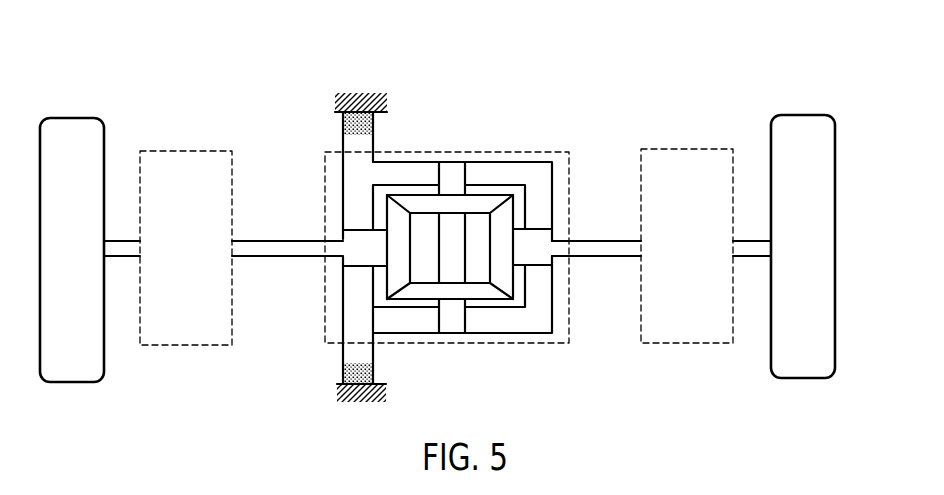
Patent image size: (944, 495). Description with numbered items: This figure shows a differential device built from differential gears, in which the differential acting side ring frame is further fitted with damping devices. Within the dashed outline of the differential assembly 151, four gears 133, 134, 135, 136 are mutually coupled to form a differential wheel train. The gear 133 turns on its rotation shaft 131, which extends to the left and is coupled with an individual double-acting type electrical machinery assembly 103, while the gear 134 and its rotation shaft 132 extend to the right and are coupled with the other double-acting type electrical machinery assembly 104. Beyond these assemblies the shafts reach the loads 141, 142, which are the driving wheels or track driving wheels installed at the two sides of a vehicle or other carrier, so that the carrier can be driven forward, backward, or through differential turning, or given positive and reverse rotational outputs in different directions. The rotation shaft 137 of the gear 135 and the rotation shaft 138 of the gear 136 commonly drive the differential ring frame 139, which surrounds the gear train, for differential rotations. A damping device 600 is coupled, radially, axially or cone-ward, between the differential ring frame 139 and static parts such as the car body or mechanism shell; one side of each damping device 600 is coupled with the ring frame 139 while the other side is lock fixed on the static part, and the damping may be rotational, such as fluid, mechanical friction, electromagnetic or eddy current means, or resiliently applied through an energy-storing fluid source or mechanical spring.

The load 141 is at (73, 143).
The load 142 is at (800, 140).
The double-acting type electrical machinery assembly 103 is at (181, 150).
The double-acting type electrical machinery assembly 104 is at (658, 148).
The rotation shaft 131 is at (312, 250).
The rotation shaft 132 is at (587, 247).
The differential gear set 151 is at (325, 170).
The differential ring frame 139 is at (537, 175).
The damping device 600 is at (373, 123).
The gear 133 is at (393, 216).
The gear 134 is at (500, 277).
The gear 135 is at (422, 207).
The gear 136 is at (413, 297).
The rotation shaft 137 is at (455, 172).
The rotation shaft 138 is at (460, 318).